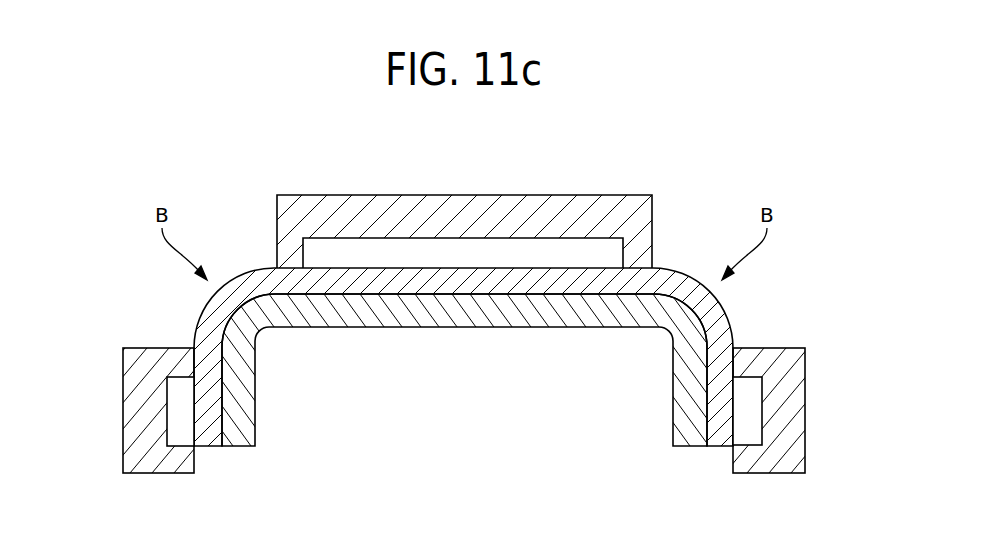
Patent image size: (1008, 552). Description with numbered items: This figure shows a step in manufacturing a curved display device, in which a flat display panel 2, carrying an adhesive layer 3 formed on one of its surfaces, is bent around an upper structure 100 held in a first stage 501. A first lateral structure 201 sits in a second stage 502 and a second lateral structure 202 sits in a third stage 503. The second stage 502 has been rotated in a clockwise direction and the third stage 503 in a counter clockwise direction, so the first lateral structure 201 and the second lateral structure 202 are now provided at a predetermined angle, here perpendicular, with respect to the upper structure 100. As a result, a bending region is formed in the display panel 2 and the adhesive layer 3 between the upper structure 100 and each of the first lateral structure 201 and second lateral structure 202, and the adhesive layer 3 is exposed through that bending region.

The display panel 2 is at (237, 433).
The adhesive layer 3 is at (212, 437).
The upper structure 100 is at (450, 252).
The first stage 501 is at (498, 210).
The second stage 502 is at (800, 437).
The third stage 503 is at (133, 437).
The first lateral structure 201 is at (755, 391).
The second lateral structure 202 is at (175, 391).